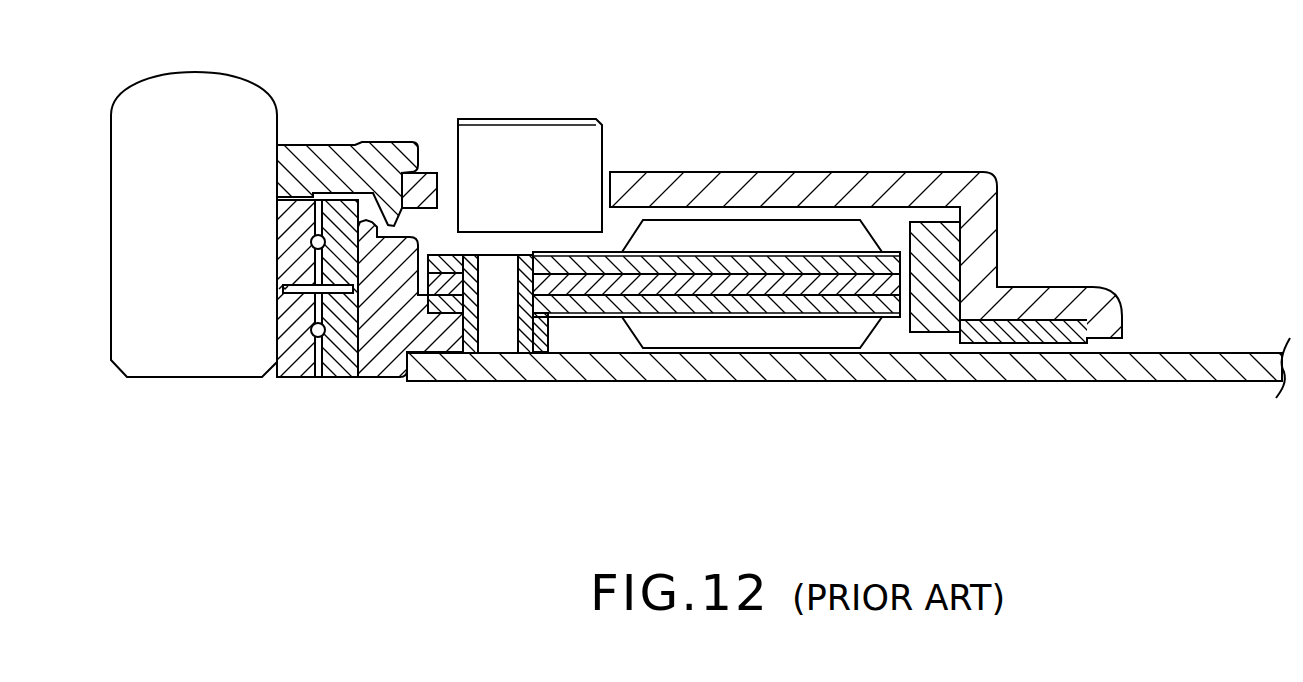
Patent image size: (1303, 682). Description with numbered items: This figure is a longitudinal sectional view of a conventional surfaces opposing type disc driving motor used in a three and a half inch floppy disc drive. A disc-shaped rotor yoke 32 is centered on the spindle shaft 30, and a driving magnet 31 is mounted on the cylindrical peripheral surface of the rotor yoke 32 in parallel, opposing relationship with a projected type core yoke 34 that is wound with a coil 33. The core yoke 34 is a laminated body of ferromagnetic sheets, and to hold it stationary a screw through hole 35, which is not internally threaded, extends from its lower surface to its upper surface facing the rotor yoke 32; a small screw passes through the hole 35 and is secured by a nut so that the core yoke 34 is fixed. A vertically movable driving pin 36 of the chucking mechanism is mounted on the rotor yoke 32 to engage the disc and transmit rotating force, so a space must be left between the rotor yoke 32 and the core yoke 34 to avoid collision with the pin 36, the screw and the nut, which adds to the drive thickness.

The spindle shaft 30 is at (226, 92).
The driving magnet 31 is at (950, 238).
The rotor yoke 32 is at (905, 193).
The coil 33 is at (740, 240).
The core yoke 34 is at (662, 268).
The screw through hole 35 is at (500, 378).
The driving pin 36 is at (562, 148).